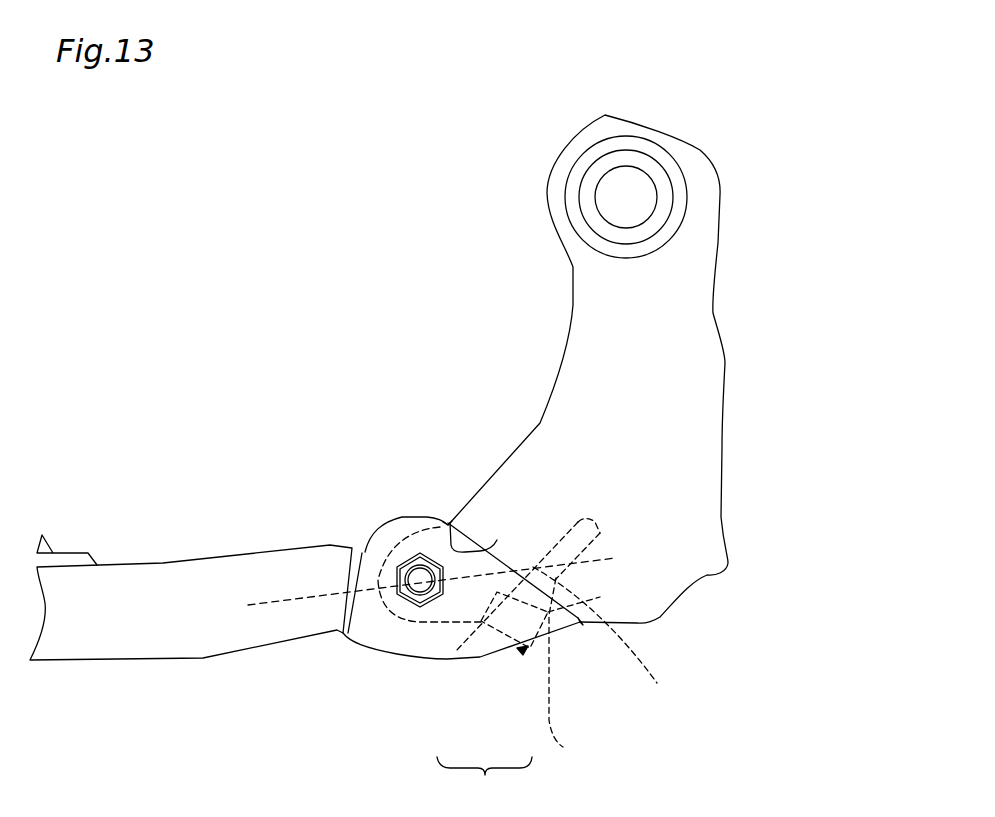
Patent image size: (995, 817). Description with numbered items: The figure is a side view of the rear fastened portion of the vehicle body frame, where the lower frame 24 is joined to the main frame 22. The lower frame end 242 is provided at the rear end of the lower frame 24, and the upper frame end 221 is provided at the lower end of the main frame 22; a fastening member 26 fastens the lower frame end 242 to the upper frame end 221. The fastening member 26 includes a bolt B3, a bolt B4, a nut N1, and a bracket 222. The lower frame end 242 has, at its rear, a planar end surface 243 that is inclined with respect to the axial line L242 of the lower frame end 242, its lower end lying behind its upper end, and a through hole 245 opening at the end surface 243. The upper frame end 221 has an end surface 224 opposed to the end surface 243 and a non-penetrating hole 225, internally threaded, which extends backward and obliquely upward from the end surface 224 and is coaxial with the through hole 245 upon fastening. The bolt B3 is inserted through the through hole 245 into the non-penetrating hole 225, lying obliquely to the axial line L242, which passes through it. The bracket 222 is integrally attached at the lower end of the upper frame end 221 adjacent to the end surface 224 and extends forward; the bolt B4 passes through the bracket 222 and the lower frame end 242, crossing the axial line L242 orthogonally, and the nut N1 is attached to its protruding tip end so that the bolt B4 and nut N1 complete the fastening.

The main frame 22 is at (726, 320).
The upper frame end 221 is at (645, 172).
The bracket 222 is at (451, 521).
The end surface 224 is at (447, 522).
The non-penetrating hole 225 is at (614, 635).
The lower frame 24 is at (192, 668).
The lower frame end 242 is at (416, 668).
The end surface 243 is at (497, 552).
The through hole 245 is at (569, 674).
The fastening member 26 is at (484, 781).
The nut N1 is at (427, 597).
The bolt B4 is at (449, 659).
The bolt B3 is at (523, 650).
The axial line L242 is at (460, 573).